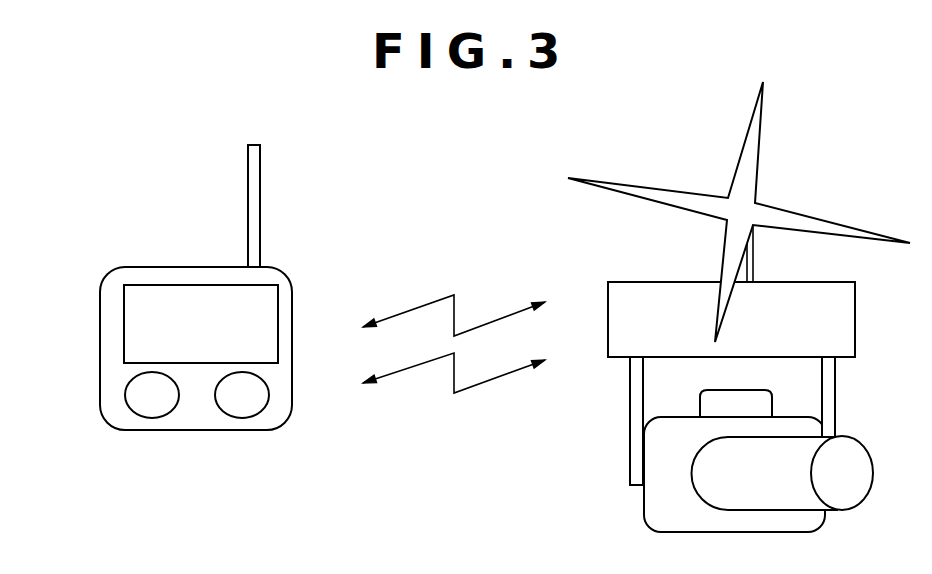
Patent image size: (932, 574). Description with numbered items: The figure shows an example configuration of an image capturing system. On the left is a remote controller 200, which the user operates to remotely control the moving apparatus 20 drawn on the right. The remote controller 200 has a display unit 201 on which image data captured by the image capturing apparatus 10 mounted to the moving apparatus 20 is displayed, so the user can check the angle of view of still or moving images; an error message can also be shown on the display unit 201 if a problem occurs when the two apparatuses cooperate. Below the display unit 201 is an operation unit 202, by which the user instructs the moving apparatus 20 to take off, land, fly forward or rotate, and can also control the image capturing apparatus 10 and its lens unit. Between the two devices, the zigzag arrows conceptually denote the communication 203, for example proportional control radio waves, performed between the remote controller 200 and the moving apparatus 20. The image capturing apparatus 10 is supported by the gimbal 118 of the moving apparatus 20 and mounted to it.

The remote controller 200 is at (100, 309).
The display unit 201 is at (168, 296).
The operation unit 202 is at (126, 391).
The communication 203 is at (476, 300).
The moving apparatus 20 is at (640, 282).
The gimbal 118 is at (836, 386).
The image capturing apparatus 10 is at (645, 508).